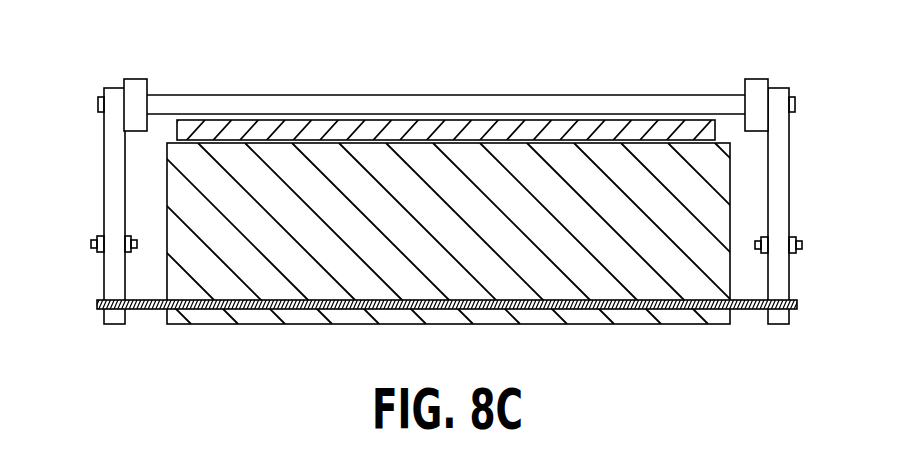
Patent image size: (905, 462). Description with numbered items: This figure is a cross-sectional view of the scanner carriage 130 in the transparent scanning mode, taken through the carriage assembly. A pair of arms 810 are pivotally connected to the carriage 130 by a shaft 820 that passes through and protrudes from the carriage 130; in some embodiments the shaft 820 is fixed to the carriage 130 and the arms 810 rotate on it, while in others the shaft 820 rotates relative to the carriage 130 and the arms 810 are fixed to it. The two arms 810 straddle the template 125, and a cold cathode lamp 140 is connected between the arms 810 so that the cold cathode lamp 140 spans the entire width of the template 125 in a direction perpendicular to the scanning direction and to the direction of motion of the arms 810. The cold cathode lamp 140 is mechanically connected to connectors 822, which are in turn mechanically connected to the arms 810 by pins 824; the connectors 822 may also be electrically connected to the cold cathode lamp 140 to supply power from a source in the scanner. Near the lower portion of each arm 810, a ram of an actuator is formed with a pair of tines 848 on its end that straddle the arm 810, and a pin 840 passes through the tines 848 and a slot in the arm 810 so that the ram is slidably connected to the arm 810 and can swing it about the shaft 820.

The carriage 130 is at (603, 265).
The template 125 is at (313, 123).
The cold cathode lamp 140 is at (527, 103).
The arms 810 is at (107, 165).
The connectors 822 is at (135, 85).
The pins 824 is at (98, 100).
The tines 848 is at (127, 236).
The pin 840 is at (91, 244).
The shaft 820 is at (200, 309).